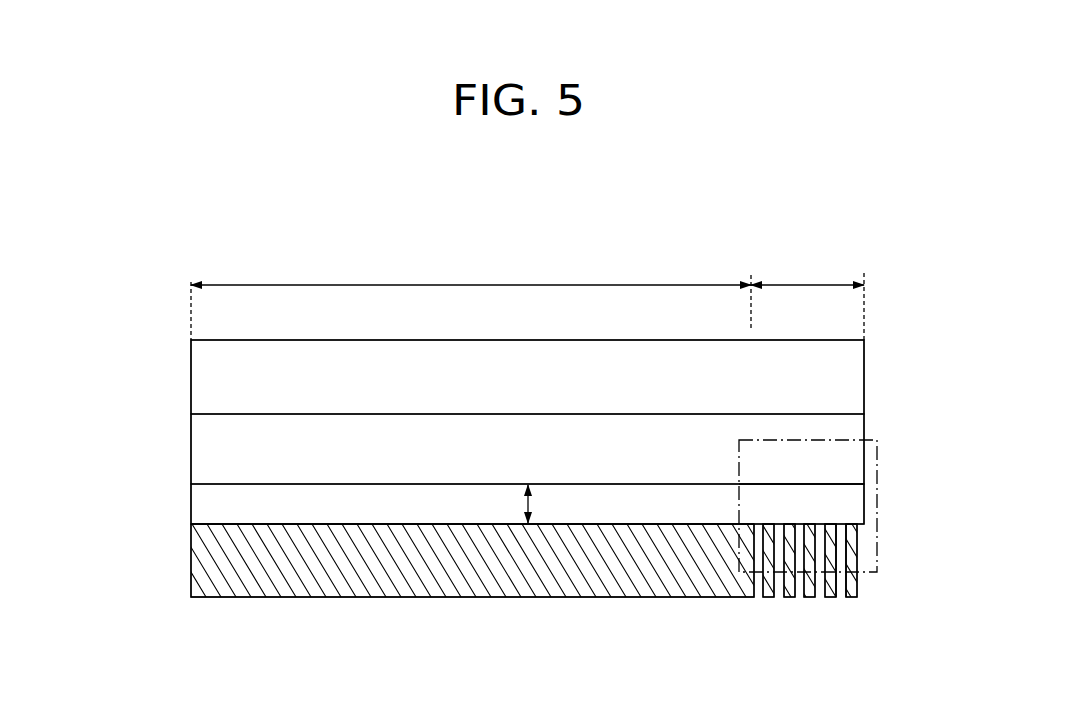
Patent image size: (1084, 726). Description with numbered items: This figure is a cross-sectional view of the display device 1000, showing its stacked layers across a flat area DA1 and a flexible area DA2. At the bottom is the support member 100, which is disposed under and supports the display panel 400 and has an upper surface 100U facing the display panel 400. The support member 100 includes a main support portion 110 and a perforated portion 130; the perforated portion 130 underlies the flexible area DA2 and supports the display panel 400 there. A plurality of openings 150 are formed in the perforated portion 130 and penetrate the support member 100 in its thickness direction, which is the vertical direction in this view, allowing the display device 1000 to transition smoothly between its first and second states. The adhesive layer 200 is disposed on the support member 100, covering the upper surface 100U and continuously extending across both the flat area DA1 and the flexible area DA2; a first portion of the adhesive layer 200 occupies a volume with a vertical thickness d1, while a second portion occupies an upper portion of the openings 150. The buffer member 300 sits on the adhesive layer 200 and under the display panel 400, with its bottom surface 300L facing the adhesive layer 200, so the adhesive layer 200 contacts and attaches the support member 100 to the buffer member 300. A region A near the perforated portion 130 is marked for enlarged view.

The display device 1000 is at (108, 370).
The display panel 400 is at (193, 378).
The buffer member 300 is at (194, 446).
The adhesive layer 200 is at (194, 505).
The support member 100 is at (190, 570).
The main support portion 110 is at (696, 598).
The perforated portion 130 is at (766, 598).
The openings 150 is at (838, 598).
The upper surface 100U is at (655, 522).
The bottom surface 300L is at (843, 484).
The enlarged region A is at (877, 542).
The vertical thickness d1 is at (543, 504).
The flat area DA1 is at (471, 298).
The flexible area DA2 is at (807, 297).